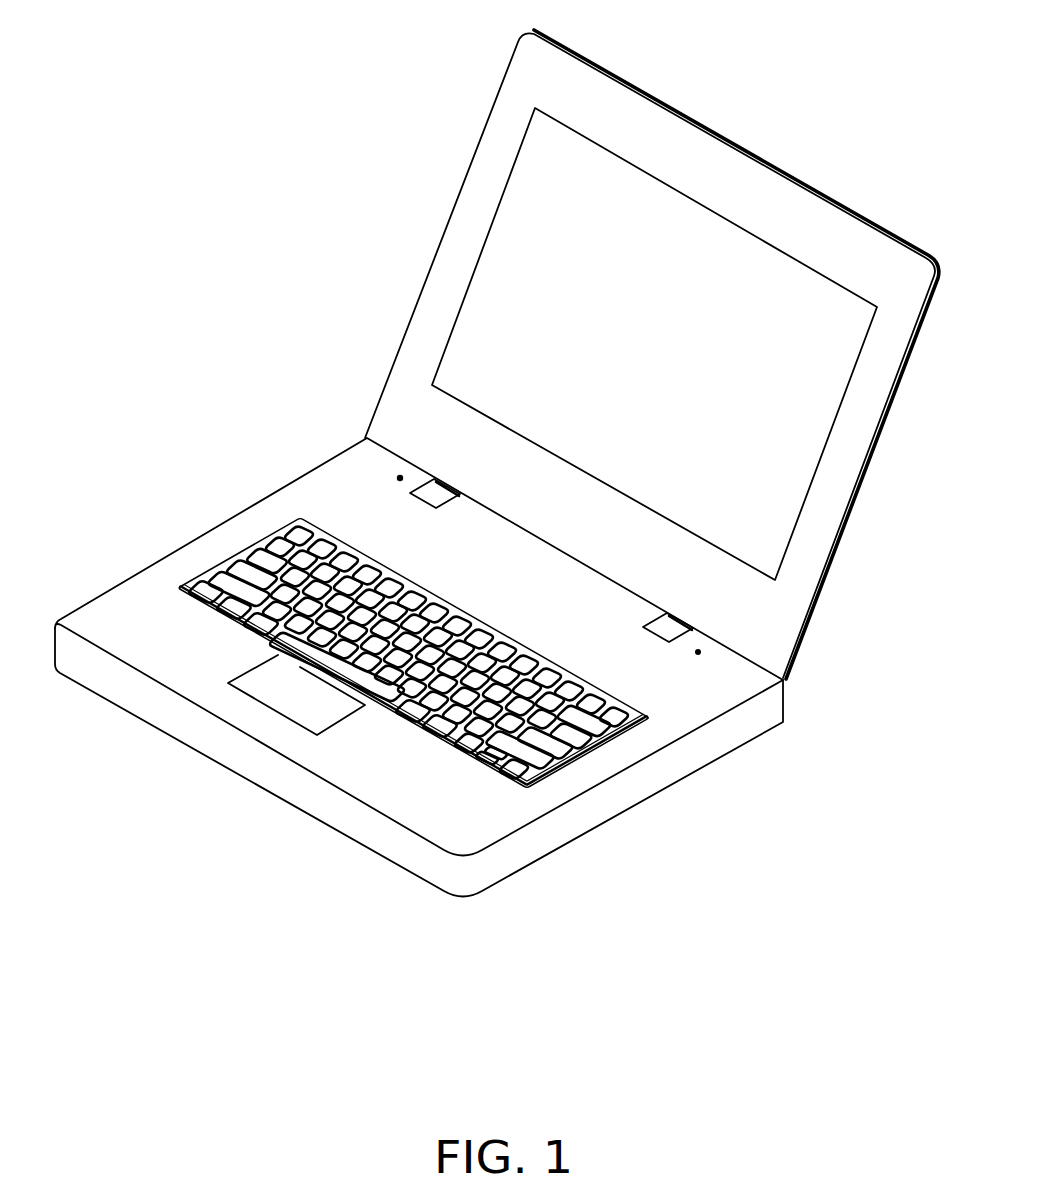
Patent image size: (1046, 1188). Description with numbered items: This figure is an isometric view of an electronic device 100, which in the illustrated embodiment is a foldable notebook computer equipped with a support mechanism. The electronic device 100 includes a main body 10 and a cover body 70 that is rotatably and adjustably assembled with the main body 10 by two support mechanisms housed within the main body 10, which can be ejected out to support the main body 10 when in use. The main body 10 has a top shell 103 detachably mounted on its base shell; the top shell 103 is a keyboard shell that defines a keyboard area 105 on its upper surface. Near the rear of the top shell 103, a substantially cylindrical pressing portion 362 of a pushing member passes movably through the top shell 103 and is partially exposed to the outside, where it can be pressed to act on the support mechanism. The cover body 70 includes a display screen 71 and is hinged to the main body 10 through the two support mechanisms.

The electronic device 100 is at (297, 68).
The main body 10 is at (593, 808).
The top shell 103 is at (498, 818).
The keyboard area 105 is at (252, 562).
The pressing portion 362 is at (400, 476).
The cover body 70 is at (445, 292).
The display screen 71 is at (526, 204).